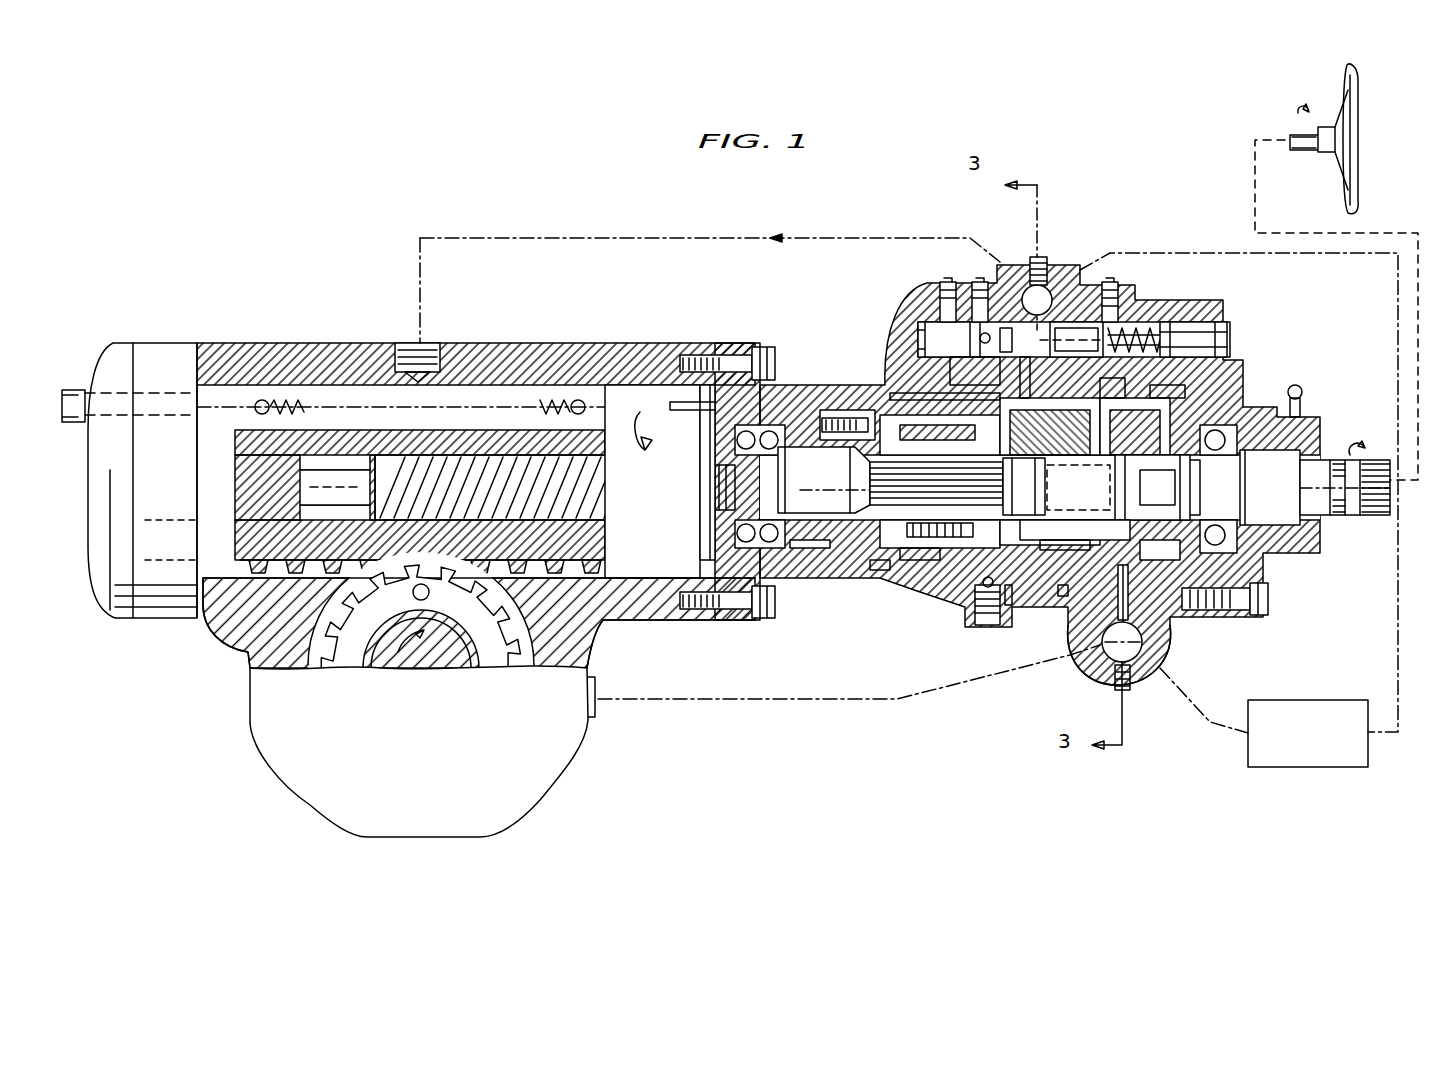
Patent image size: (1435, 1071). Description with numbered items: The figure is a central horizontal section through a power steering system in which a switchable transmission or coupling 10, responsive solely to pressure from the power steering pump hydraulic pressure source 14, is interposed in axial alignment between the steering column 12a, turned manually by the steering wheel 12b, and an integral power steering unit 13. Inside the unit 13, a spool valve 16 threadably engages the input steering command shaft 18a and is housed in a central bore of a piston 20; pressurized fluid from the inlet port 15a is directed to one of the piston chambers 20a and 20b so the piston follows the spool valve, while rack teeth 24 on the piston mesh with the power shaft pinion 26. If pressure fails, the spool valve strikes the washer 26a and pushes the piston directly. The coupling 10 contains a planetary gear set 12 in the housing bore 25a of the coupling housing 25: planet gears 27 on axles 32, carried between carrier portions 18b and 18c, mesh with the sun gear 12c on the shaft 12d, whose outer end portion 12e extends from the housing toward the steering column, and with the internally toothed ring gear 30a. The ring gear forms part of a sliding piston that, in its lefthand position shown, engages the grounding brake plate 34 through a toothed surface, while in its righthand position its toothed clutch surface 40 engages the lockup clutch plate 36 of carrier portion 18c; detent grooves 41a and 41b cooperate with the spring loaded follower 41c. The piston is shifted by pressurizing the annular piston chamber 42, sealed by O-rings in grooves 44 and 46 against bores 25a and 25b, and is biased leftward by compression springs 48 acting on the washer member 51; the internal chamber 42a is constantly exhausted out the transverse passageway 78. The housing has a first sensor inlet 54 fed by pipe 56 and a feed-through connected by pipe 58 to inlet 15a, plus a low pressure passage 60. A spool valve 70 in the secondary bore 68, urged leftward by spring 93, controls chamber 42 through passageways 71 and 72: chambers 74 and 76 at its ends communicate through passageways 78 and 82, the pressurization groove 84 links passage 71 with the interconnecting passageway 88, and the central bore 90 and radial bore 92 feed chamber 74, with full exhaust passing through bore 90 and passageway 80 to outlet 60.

The switchable transmission or coupling 10 is at (1178, 228).
The planetary gear set 12 is at (1222, 350).
The steering column 12a is at (1305, 152).
The steering wheel 12b is at (1358, 84).
The sun gear 12c is at (1090, 493).
The shaft 12d is at (1288, 486).
The input shaft splined end 12e is at (1378, 515).
The integral power steering unit 13 is at (251, 331).
The power steering pump hydraulic pressure source 14 is at (1313, 768).
The inlet port 15a is at (414, 342).
The spool valve 16 is at (518, 452).
The input steering command shaft 18a is at (842, 475).
The carrier portion 18b is at (920, 565).
The carrier portion 18c is at (1180, 528).
The piston 20 is at (470, 425).
The piston chamber 20a is at (230, 477).
The piston chamber 20b is at (676, 544).
The rack teeth 24 is at (525, 585).
The coupling housing 25 is at (1018, 656).
The housing bore 25a is at (1152, 580).
The reduced diameter housing bore portion 25b is at (880, 548).
The power shaft pinion 26 is at (497, 660).
The washer 26a is at (612, 425).
The planet gears 27 is at (1163, 484).
The ring gear 30a is at (1120, 590).
The axles 32 is at (1148, 520).
The grounding brake plate 34 is at (820, 560).
The lockup clutch plate 36 is at (1120, 545).
The toothed clutch surface 40 is at (1102, 545).
The detent groove 41a is at (975, 597).
The detent groove 41b is at (1010, 585).
The spring loaded follower 41c is at (988, 590).
The piston chamber 42 is at (936, 392).
The internal chamber 42a is at (865, 497).
The O-ring retaining groove 44 is at (1064, 596).
The O-ring retaining groove 46 is at (885, 570).
The compression springs 48 is at (915, 516).
The washer member 51 is at (1000, 525).
The first sensor inlet 54 is at (1010, 275).
The pipe 56 is at (1398, 660).
The pipe 58 is at (618, 238).
The low pressure hydraulic passage 60 is at (1165, 650).
The secondary bore 68 is at (1145, 318).
The spool valve 70 is at (1070, 322).
The passageway 71 is at (1036, 372).
The passageway 72 is at (990, 365).
The piston chamber 74 is at (1170, 390).
The piston chamber 76 is at (927, 322).
The transverse passageway 78 is at (1170, 635).
The passageway 80 is at (1106, 372).
The transverse passageway 82 is at (924, 368).
The pressurization groove 84 is at (1062, 303).
The interconnecting passageway 88 is at (1047, 280).
The central bore 90 is at (1028, 286).
The radial bore 92 is at (975, 325).
The spring 93 is at (1185, 322).